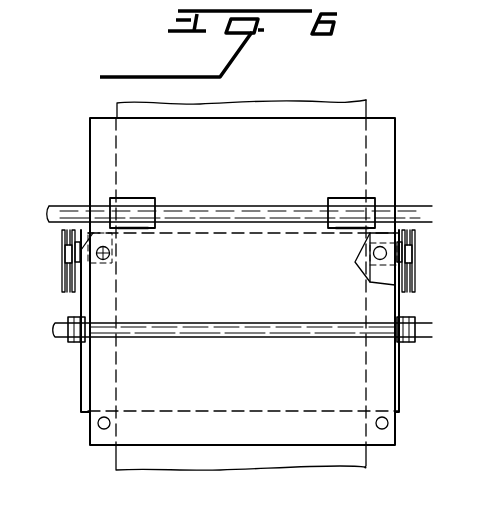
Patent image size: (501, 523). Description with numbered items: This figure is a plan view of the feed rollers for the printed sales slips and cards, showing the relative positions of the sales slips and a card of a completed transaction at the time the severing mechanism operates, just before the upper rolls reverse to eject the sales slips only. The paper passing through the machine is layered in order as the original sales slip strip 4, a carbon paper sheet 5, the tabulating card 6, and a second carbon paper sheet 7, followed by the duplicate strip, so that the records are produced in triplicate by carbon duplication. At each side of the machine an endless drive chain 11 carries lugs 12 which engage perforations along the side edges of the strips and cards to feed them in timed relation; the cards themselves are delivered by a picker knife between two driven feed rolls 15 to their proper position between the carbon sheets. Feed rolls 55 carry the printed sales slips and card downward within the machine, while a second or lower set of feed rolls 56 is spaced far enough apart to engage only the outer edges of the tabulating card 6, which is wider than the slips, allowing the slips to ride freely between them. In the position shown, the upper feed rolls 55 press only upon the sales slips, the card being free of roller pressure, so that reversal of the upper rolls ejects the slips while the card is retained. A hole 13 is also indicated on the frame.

The original sales slip strip 4 is at (388, 160).
The carbon paper sheet 5 is at (370, 103).
The tabulating card 6 is at (400, 380).
The carbon paper sheet 7 is at (95, 180).
The endless drive chain 11 is at (62, 256).
The lugs 12 is at (112, 255).
The hole 13 is at (112, 258).
The driven feed rolls 15 is at (370, 281).
The feed rolls 55 is at (150, 198).
The lower feed rolls 56 is at (68, 318).